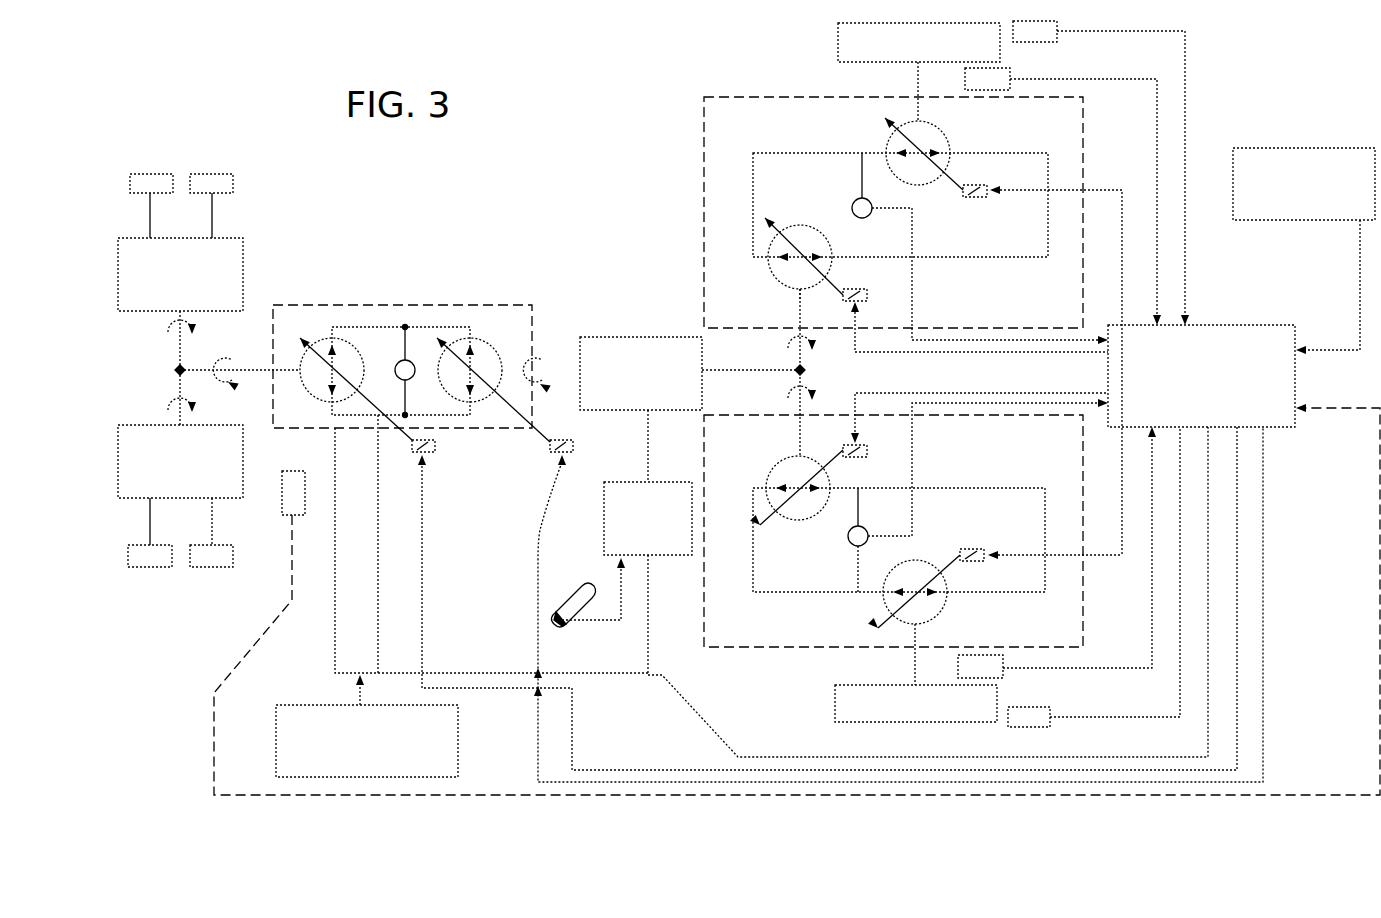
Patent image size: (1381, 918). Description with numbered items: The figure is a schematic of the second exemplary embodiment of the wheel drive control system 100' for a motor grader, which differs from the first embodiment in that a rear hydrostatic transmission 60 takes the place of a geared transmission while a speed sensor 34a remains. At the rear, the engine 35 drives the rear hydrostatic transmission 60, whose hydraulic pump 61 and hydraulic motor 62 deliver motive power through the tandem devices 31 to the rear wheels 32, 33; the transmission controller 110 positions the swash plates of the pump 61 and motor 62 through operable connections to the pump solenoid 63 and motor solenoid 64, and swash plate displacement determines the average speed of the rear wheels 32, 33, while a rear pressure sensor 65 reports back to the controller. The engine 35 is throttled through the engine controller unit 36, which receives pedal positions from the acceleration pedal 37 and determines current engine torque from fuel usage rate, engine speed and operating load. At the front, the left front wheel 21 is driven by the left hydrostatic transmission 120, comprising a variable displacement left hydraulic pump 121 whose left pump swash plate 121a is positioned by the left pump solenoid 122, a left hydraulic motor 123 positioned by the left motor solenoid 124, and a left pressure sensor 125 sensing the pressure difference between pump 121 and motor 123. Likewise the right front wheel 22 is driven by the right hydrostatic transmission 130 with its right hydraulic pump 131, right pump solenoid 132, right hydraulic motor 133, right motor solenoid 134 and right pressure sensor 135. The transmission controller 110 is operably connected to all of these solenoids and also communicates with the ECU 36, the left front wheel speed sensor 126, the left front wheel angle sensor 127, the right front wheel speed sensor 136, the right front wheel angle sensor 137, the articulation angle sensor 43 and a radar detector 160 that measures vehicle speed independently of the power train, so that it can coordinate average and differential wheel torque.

The left front wheel 21 is at (919, 60).
The right front wheel 22 is at (902, 705).
The tandem device 31 is at (195, 368).
The rear wheel 32 is at (211, 372).
The rear wheel 33 is at (150, 372).
The rear speed sensor 34a is at (278, 508).
The engine 35 is at (641, 353).
The engine controller unit (ECU) 36 is at (889, 583).
The acceleration pedal 37 is at (588, 606).
The articulation angle sensor 43 is at (349, 726).
The rear hydrostatic transmission 60 is at (345, 305).
The rear hydraulic pump 61 is at (462, 340).
The rear hydraulic motor 62 is at (354, 372).
The rear hydraulic pump solenoid 63 is at (898, 604).
The rear motor solenoid 64 is at (824, 598).
The rear pressure sensor 65 is at (406, 358).
The wheel drive control system 100' is at (797, 621).
The transmission controller 110 is at (1222, 365).
The left hydrostatic transmission 120 is at (812, 97).
The left hydraulic pump 121 is at (900, 221).
The left pump swash plate 121a is at (788, 283).
The left pump solenoid 122 is at (935, 283).
The left hydraulic motor 123 is at (897, 153).
The left motor solenoid 124 is at (1002, 335).
The left pressure sensor 125 is at (965, 248).
The left front wheel speed sensor 126 is at (1063, 184).
The left front wheel angle sensor 127 is at (1101, 162).
The right hydrostatic transmission 130 is at (812, 647).
The right hydraulic pump 131 is at (899, 524).
The right pump solenoid 132 is at (929, 460).
The right hydraulic motor 133 is at (896, 622).
The right motor solenoid 134 is at (995, 575).
The right pressure sensor 135 is at (963, 495).
The right front wheel speed sensor 136 is at (1057, 564).
The right front wheel angle sensor 137 is at (1094, 587).
The radar detector 160 is at (1304, 234).